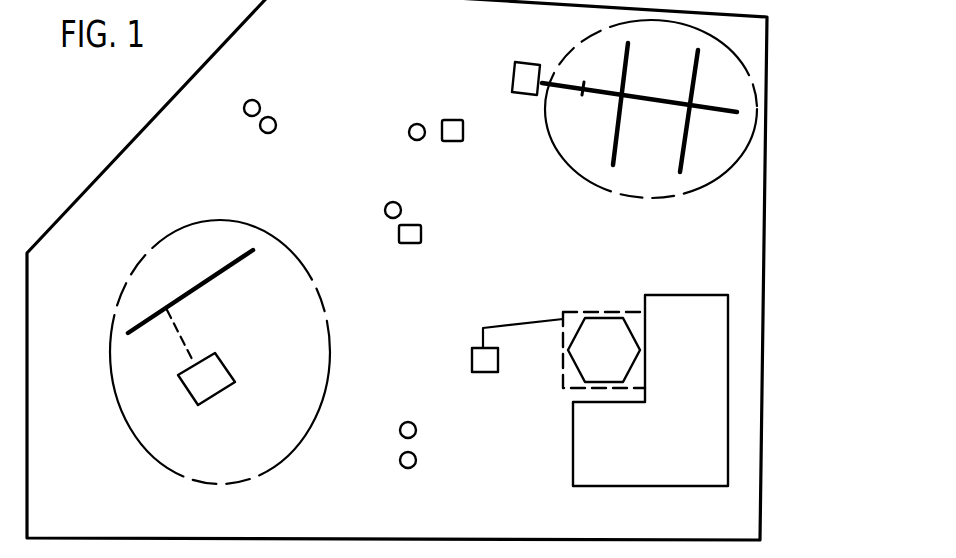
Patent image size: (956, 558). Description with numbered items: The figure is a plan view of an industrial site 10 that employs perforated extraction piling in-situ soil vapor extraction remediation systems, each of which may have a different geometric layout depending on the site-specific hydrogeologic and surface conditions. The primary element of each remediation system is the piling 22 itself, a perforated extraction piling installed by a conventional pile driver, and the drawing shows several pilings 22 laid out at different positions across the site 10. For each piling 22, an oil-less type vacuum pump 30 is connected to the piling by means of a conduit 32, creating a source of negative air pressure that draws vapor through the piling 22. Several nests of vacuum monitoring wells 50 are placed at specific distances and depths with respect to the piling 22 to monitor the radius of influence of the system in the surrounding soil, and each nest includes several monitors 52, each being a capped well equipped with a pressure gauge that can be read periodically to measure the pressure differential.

The industrial site 10 is at (114, 144).
The piling 22 is at (217, 280).
The vacuum pump 30 is at (233, 381).
The conduit 32 is at (181, 333).
The vacuum monitoring wells 50 is at (266, 90).
The monitor 52 is at (416, 429).